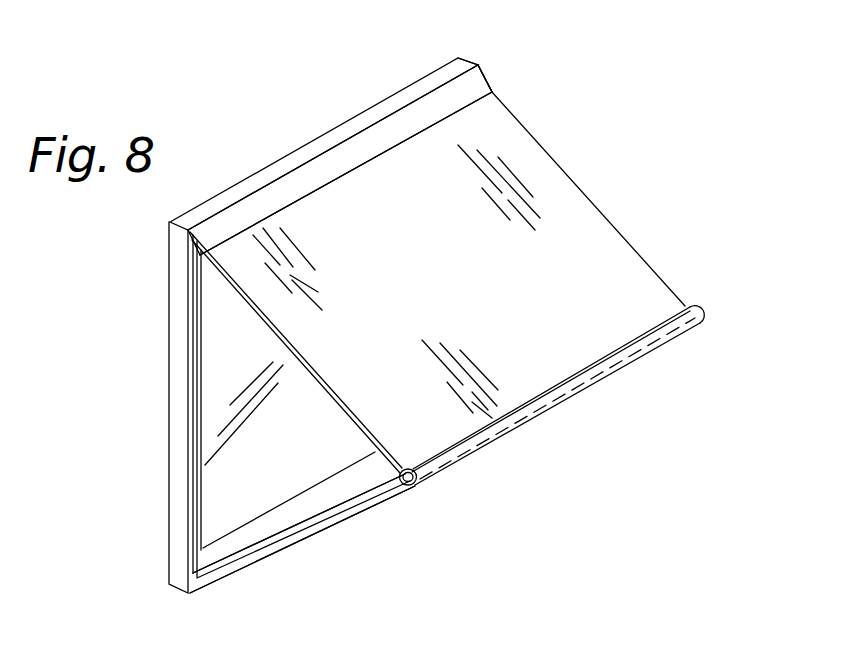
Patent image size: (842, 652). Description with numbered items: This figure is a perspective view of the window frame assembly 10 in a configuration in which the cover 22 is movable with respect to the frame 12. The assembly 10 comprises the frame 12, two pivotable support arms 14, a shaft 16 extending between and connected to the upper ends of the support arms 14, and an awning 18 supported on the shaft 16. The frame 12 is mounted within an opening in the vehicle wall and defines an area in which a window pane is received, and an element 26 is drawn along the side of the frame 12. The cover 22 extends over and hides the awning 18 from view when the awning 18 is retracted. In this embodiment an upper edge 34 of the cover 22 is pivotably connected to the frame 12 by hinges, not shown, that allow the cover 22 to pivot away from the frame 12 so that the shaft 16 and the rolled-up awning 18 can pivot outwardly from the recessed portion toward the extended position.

The assembly 10 is at (592, 138).
The frame 12 is at (415, 82).
The pivotable support arms 14 is at (357, 503).
The shaft 16 is at (693, 312).
The awning 18 is at (621, 258).
The cover 22 is at (478, 88).
The side track post 26 is at (198, 423).
The upper edge 34 is at (268, 183).